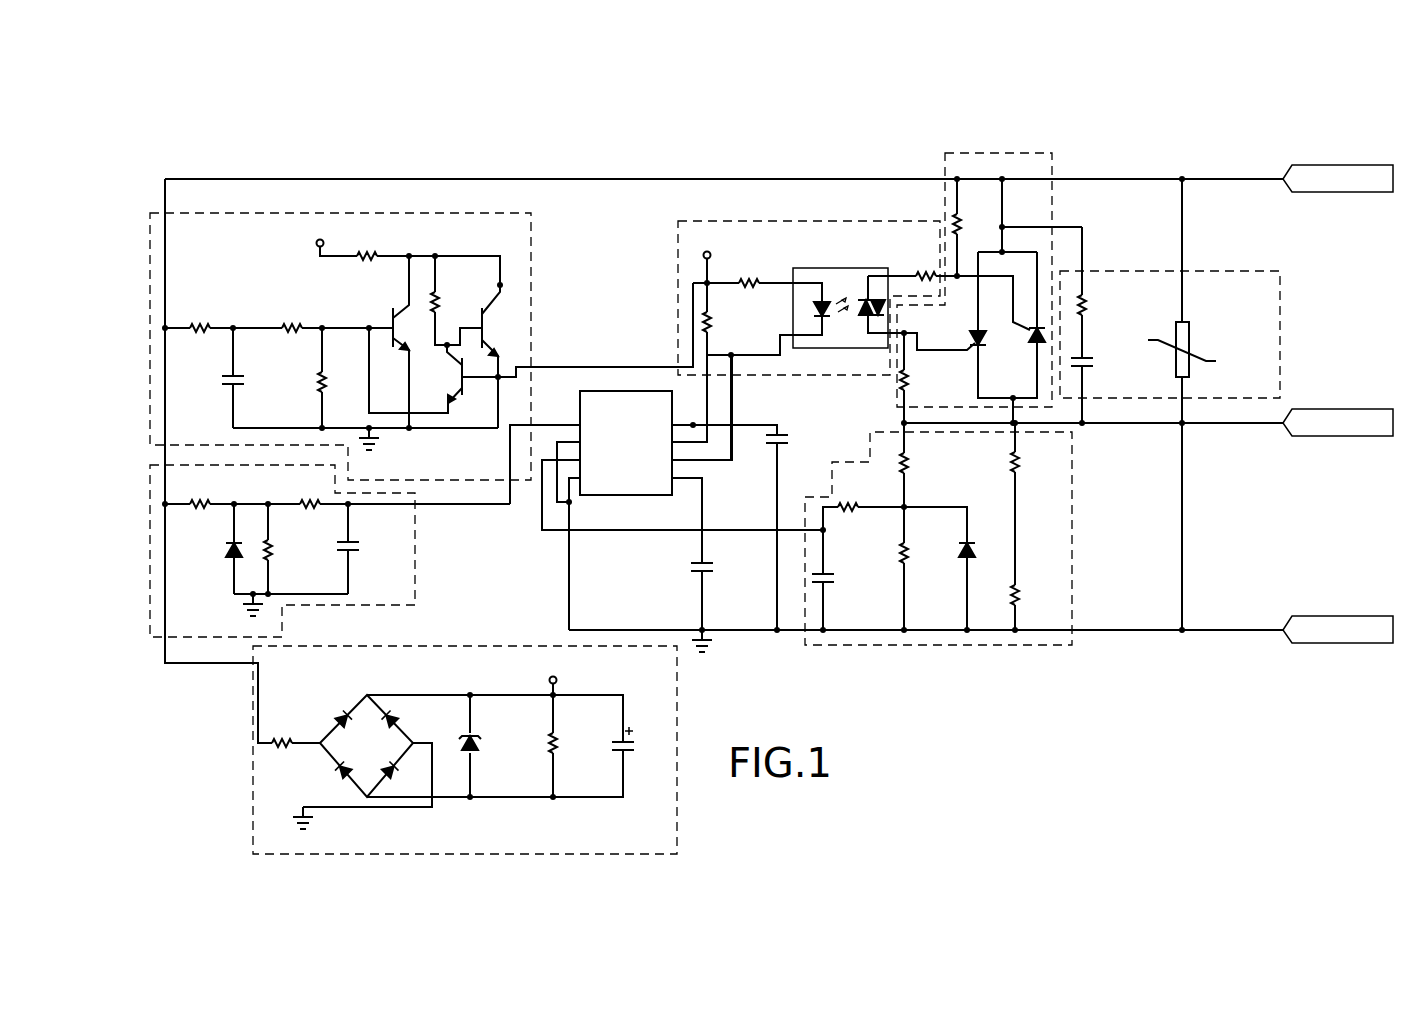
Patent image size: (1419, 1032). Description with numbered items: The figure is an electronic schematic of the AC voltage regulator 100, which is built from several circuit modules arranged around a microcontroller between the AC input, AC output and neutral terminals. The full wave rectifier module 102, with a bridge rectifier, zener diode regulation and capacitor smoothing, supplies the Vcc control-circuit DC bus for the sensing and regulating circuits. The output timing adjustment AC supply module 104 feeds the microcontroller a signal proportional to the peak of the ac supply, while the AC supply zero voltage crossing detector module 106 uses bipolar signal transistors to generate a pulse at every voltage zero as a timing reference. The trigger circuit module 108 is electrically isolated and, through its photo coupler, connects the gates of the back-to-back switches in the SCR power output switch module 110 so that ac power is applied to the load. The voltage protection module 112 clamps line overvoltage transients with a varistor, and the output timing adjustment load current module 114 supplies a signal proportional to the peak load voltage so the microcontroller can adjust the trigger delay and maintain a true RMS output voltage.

The AC voltage regulator 100 is at (617, 160).
The full wave rectifier module 102 is at (478, 778).
The output timing adjustment AC supply module 104 is at (318, 632).
The AC supply zero voltage crossing detector module 106 is at (421, 284).
The trigger circuit module 108 is at (826, 289).
The SCR power output switch module 110 is at (1056, 249).
The voltage protection module 112 is at (1239, 326).
The output timing adjustment load current module 114 is at (950, 582).